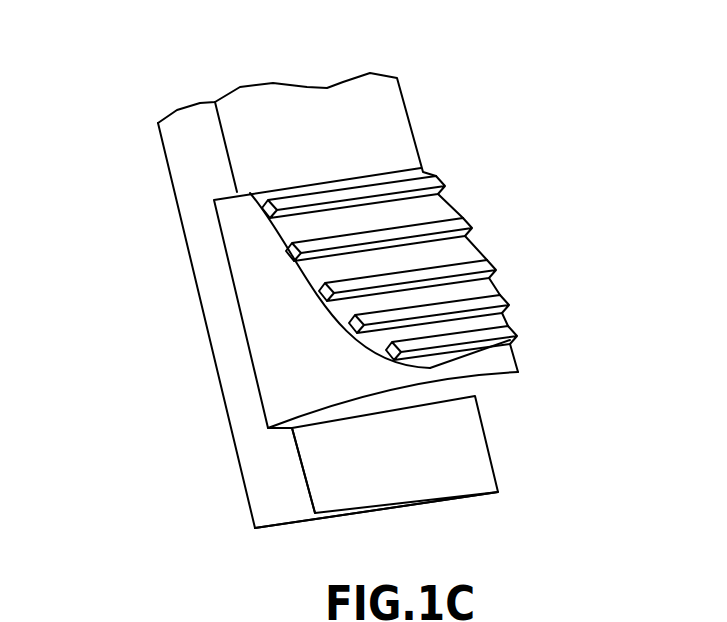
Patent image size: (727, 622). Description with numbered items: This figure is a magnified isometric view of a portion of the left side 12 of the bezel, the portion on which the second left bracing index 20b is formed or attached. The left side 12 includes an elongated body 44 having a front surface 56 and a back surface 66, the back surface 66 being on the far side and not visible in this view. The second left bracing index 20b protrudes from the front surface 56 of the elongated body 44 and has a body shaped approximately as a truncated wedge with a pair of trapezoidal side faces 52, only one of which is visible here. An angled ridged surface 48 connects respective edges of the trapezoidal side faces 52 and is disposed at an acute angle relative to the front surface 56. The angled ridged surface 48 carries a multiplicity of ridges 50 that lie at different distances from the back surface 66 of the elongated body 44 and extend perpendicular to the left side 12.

The left side 12 is at (170, 225).
The back surface 66 is at (167, 170).
The elongated body 44 is at (262, 478).
The front surface 56 is at (340, 112).
The trapezoidal side faces 52 is at (280, 334).
The angled ridged surface 48 is at (503, 253).
The ridges 50 is at (447, 228).
The second left bracing index 20b is at (522, 333).